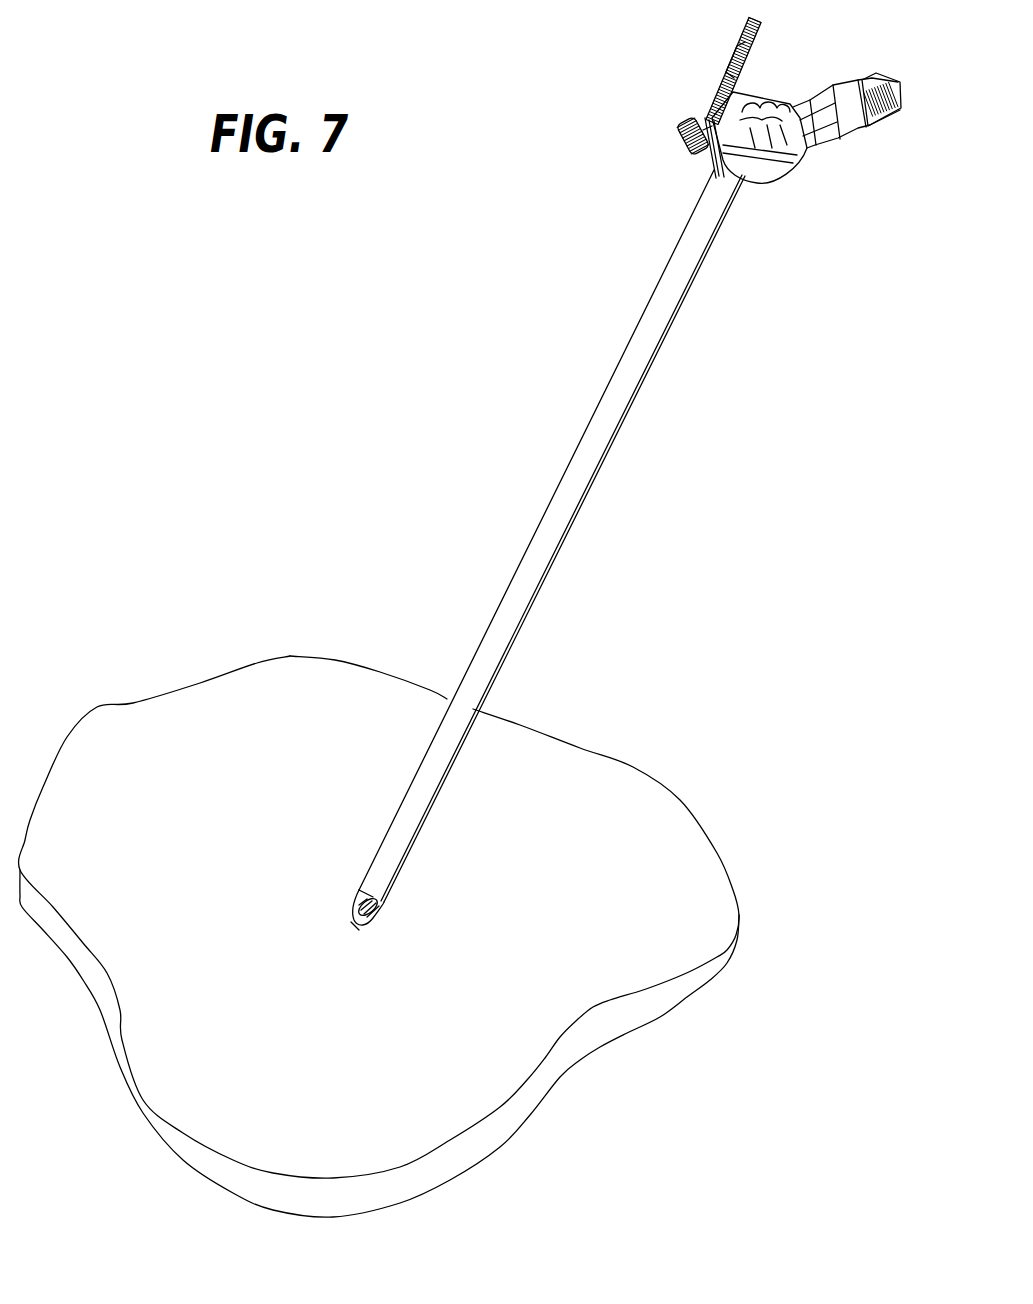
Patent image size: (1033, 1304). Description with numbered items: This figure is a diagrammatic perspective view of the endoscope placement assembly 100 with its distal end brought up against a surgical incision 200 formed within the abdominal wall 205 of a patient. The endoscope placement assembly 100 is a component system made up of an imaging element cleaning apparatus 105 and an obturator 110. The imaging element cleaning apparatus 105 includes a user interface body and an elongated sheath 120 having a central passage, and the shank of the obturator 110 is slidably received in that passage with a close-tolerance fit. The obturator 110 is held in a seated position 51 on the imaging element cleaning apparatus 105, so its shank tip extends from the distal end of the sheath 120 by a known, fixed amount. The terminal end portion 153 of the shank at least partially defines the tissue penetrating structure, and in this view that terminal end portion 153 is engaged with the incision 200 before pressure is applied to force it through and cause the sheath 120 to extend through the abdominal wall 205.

The seated position 51 is at (758, 86).
The endoscope placement assembly 100 is at (627, 502).
The imaging element cleaning apparatus 105 is at (760, 180).
The obturator 110 is at (776, 99).
The sheath 120 is at (513, 608).
The terminal end portion of the shank 153 is at (363, 928).
The incision 200 is at (354, 926).
The abdominal wall 205 is at (598, 793).